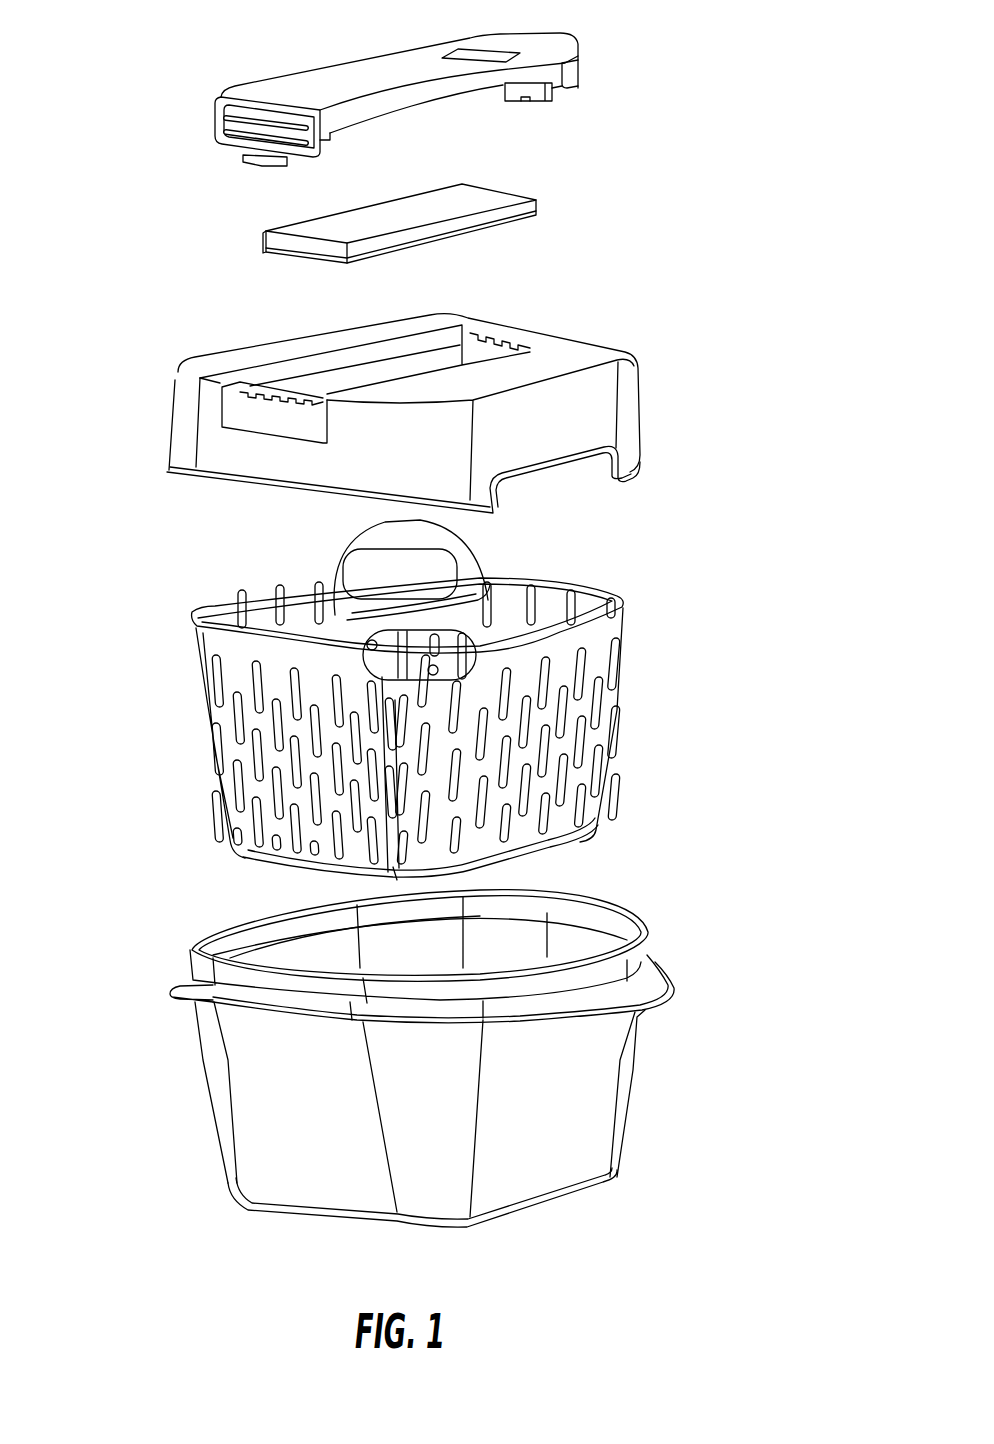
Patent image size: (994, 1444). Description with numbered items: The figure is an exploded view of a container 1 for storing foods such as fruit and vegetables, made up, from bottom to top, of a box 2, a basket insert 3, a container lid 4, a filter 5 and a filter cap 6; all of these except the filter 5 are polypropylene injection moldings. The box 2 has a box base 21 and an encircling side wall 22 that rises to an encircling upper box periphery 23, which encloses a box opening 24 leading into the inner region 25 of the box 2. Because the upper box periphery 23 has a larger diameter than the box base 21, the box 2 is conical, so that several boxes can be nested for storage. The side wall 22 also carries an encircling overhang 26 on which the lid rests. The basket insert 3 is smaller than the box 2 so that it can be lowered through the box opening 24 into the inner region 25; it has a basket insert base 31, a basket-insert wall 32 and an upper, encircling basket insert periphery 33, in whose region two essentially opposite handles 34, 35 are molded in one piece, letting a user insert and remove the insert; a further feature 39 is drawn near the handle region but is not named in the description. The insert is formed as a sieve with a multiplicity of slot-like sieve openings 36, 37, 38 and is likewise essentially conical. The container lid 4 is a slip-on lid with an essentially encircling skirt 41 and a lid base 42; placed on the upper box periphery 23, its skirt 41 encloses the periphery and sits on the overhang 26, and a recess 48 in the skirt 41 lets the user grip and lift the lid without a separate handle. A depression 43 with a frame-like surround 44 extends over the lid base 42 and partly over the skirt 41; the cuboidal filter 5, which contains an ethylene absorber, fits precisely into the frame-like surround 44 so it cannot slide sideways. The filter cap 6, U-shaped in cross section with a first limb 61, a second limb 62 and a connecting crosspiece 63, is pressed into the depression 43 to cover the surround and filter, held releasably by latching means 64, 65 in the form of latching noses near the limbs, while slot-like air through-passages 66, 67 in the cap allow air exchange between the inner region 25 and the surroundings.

The container 1 is at (676, 1211).
The box 2 is at (113, 886).
The basket insert 3 is at (113, 512).
The container lid 4 is at (113, 293).
The filter 5 is at (317, 230).
The filter cap 6 is at (113, 5).
The box base 21 is at (497, 1220).
The side wall 22 is at (593, 1143).
The upper box periphery 23 is at (622, 917).
The box opening 24 is at (590, 928).
The inner region 25 is at (390, 968).
The encircling overhang 26 is at (643, 987).
The basket insert base 31 is at (553, 852).
The basket-insert wall 32 is at (598, 655).
The upper basket insert periphery 33 is at (550, 585).
The handle 34 is at (380, 625).
The handle 35 is at (380, 540).
The sieve opening 36 is at (390, 716).
The sieve opening 37 is at (393, 780).
The sieve opening 38 is at (423, 745).
The handle pivot post 39 is at (500, 620).
The skirt 41 is at (597, 407).
The lid base 42 is at (580, 352).
The depression 43 is at (232, 413).
The frame-like surround 44 is at (450, 357).
The recess 48 is at (557, 467).
The first limb 61 is at (215, 107).
The second limb 62 is at (570, 87).
The crosspiece 63 is at (375, 73).
The latching means 64 is at (257, 162).
The latching means 65 is at (540, 103).
The air through-passage 66 is at (275, 123).
The air through-passage 67 is at (580, 62).